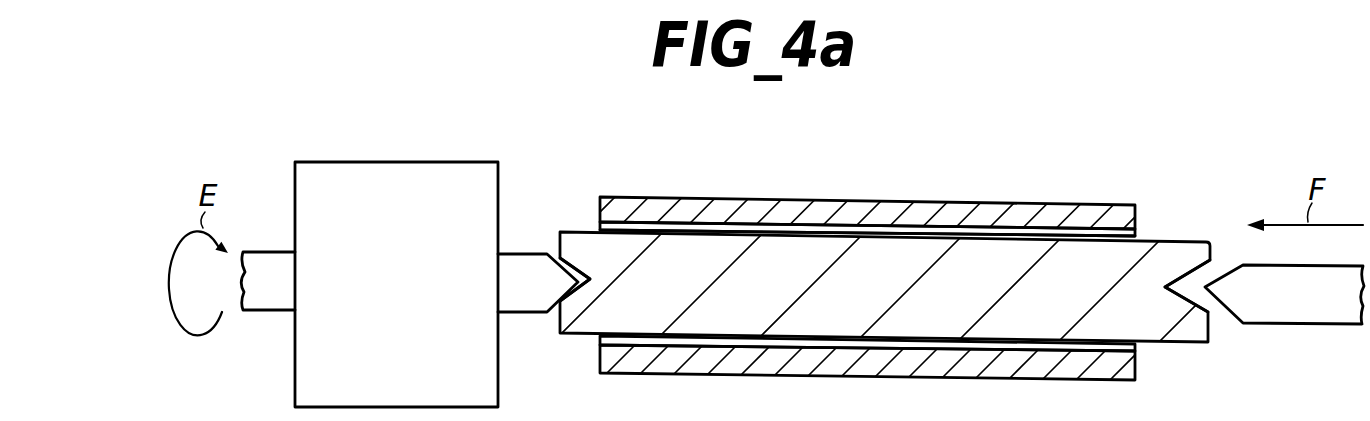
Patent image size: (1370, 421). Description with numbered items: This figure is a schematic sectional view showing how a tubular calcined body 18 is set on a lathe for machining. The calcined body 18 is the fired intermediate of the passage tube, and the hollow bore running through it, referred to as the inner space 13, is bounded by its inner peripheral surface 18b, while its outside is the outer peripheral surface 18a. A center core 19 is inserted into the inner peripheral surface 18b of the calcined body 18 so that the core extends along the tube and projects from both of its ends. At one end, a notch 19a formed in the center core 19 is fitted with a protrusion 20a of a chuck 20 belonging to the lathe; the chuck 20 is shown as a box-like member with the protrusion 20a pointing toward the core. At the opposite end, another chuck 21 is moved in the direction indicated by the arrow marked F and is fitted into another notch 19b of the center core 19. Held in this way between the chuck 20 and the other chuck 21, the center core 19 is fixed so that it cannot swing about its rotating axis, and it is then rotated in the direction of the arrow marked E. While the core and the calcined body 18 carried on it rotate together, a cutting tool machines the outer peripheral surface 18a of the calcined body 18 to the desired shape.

The inner space 13 is at (1124, 235).
The tubular calcined body 18 is at (884, 248).
The outer peripheral surface 18a is at (863, 193).
The inner peripheral surface 18b is at (778, 240).
The center core 19 is at (690, 247).
The notch 19a is at (570, 298).
The another notch 19b is at (1208, 306).
The chuck 20 is at (400, 173).
The protrusion 20a is at (523, 268).
The another chuck 21 is at (1325, 302).